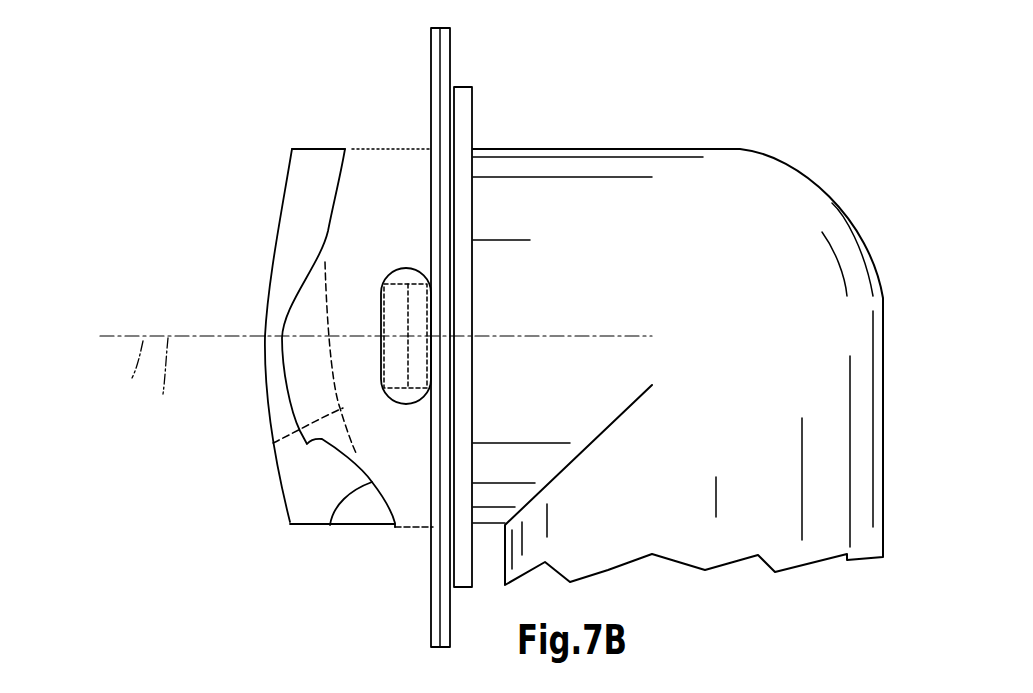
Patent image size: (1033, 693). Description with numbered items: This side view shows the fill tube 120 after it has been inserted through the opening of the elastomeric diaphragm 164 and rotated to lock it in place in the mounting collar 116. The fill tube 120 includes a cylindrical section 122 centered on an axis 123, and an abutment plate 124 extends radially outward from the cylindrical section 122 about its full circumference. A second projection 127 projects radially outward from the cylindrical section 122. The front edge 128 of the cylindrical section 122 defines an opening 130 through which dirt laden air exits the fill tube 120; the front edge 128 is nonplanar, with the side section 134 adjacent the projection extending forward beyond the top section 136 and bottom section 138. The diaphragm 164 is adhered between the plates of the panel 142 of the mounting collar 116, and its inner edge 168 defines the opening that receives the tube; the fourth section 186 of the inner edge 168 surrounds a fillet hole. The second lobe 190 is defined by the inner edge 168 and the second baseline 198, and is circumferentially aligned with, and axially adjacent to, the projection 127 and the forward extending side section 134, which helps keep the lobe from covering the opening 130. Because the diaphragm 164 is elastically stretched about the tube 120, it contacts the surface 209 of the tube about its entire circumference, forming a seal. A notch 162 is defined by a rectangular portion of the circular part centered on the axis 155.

The mounting collar 116 is at (506, 25).
The panel 142 is at (464, 57).
The abutment plate 124 is at (472, 110).
The inner edge 168 is at (332, 164).
The top section 136 is at (292, 149).
The surface 209 is at (307, 220).
The fill tube 120 is at (201, 277).
The second projection 127 is at (397, 318).
The opening 130 is at (252, 327).
The side section 134 is at (265, 344).
The axis 155 is at (115, 371).
The axis 123 is at (151, 379).
The second lobe 190 is at (300, 397).
The second baseline 198 is at (273, 443).
The front edge 128 is at (277, 478).
The bottom section 138 is at (290, 524).
The cylindrical section 122 is at (310, 525).
The fourth section 186 is at (330, 525).
The elastomeric diaphragm 164 is at (406, 528).
The notch 162 is at (469, 465).